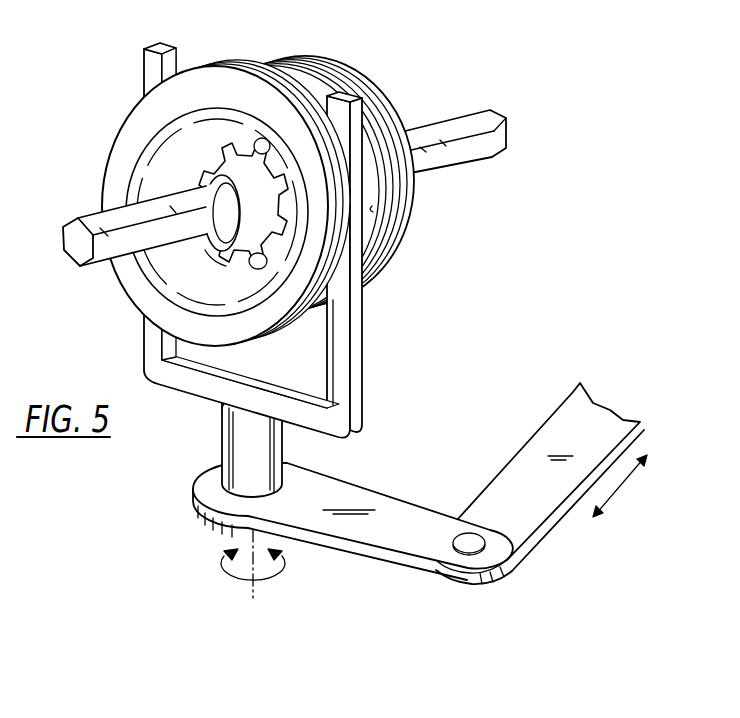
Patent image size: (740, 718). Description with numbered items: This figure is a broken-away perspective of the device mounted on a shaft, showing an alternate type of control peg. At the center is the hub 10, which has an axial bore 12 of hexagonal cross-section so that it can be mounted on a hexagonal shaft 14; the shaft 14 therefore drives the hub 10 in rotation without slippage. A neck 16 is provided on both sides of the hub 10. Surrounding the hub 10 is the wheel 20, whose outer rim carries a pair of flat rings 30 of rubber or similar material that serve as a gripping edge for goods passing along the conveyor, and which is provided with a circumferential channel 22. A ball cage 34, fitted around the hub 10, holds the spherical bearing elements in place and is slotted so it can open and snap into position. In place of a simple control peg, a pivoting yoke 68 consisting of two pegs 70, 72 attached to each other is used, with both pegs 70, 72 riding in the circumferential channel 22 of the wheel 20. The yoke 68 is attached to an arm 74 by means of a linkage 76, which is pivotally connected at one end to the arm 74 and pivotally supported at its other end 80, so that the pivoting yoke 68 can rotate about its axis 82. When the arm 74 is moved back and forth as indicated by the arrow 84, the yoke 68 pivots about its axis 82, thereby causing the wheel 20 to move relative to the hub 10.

The hub 10 is at (256, 266).
The axial bore 12 is at (175, 193).
The hexagonal shaft 14 is at (472, 126).
The neck 16 is at (212, 262).
The wheel 20 is at (142, 298).
The circumferential channel 22 is at (372, 206).
The flat rings 30 is at (299, 56).
The ball cage 34 is at (276, 207).
The pivoting yoke 68 is at (269, 237).
The peg 70 is at (350, 93).
The peg 72 is at (155, 71).
The arm 74 is at (562, 428).
The linkage 76 is at (363, 510).
The other end 80 is at (234, 538).
The axis 82 is at (250, 589).
The arrow 84 is at (622, 484).